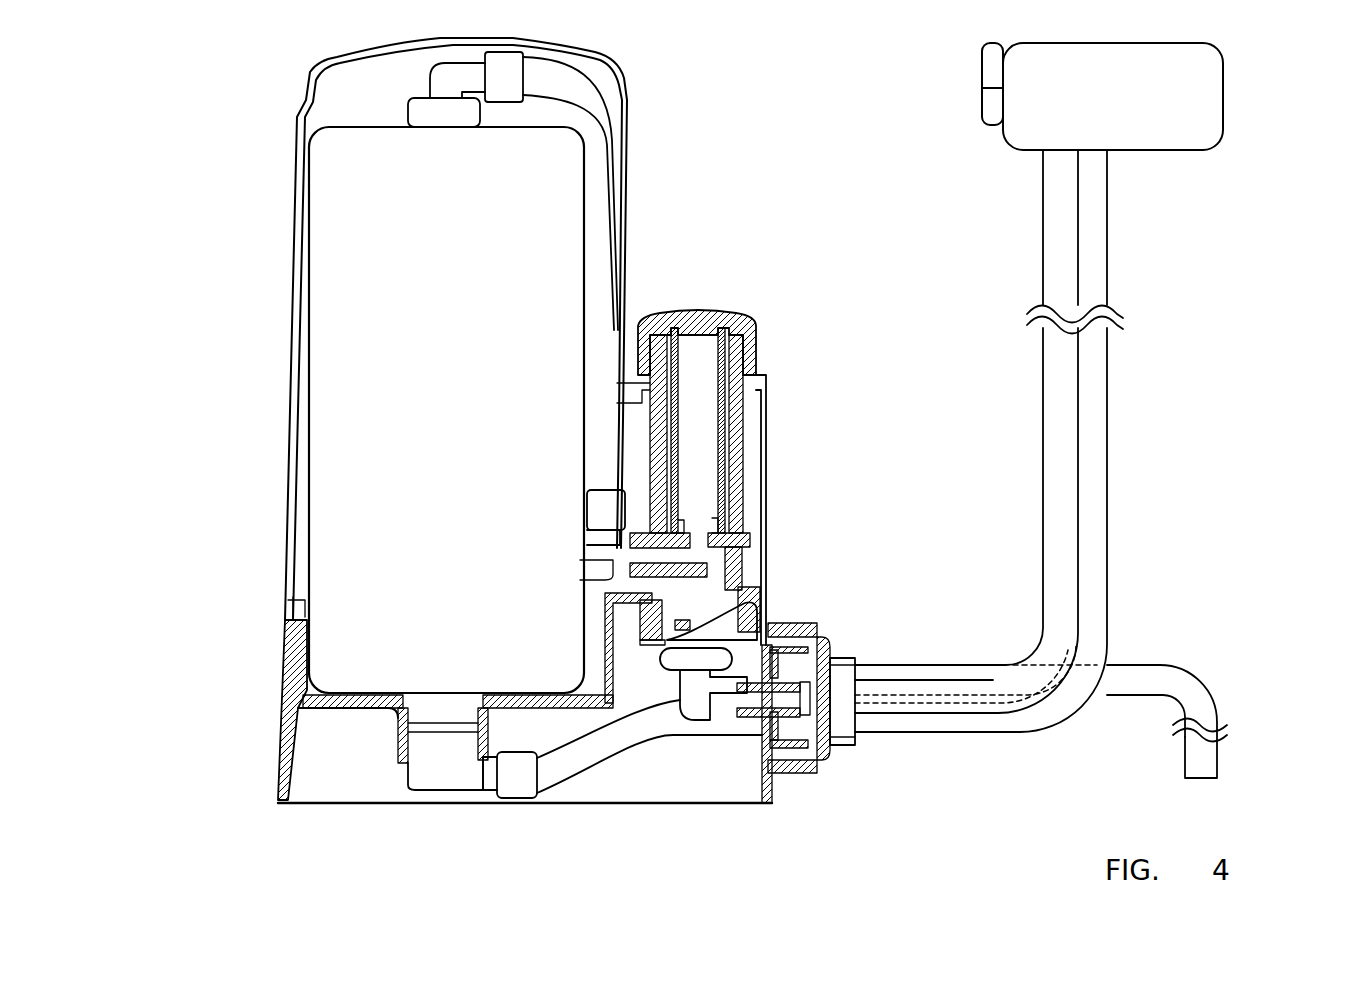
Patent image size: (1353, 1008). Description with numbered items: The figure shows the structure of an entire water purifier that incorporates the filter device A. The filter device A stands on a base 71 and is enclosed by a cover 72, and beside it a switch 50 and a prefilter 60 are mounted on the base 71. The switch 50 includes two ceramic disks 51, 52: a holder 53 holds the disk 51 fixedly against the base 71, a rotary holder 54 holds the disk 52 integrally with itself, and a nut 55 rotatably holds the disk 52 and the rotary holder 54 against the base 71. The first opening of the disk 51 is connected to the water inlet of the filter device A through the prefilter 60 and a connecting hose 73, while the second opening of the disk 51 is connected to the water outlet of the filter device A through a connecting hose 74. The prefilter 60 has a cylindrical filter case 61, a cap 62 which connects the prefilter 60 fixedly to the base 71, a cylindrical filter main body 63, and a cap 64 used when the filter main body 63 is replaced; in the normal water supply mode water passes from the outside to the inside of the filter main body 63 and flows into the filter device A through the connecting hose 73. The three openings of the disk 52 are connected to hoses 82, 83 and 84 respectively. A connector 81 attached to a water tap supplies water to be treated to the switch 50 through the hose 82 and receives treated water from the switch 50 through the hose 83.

The filter device A is at (332, 272).
The switch 50 is at (849, 693).
The ceramic disk 51 is at (797, 775).
The ceramic disk 52 is at (832, 745).
The holder 53 is at (777, 625).
The rotary holder 54 is at (848, 641).
The nut 55 is at (781, 775).
The prefilter 60 is at (744, 445).
The cylindrical filter case 61 is at (742, 462).
The cap 62 is at (665, 625).
The cylindrical filter main body 63 is at (727, 432).
The cap 64 is at (673, 325).
The base 71 is at (283, 760).
The cover 72 is at (288, 438).
The connecting hose 73 is at (590, 118).
The connecting hose 74 is at (567, 777).
The connector 81 is at (1212, 112).
The hose 82 is at (1058, 477).
The hose 83 is at (1090, 428).
The hose 84 is at (1170, 685).